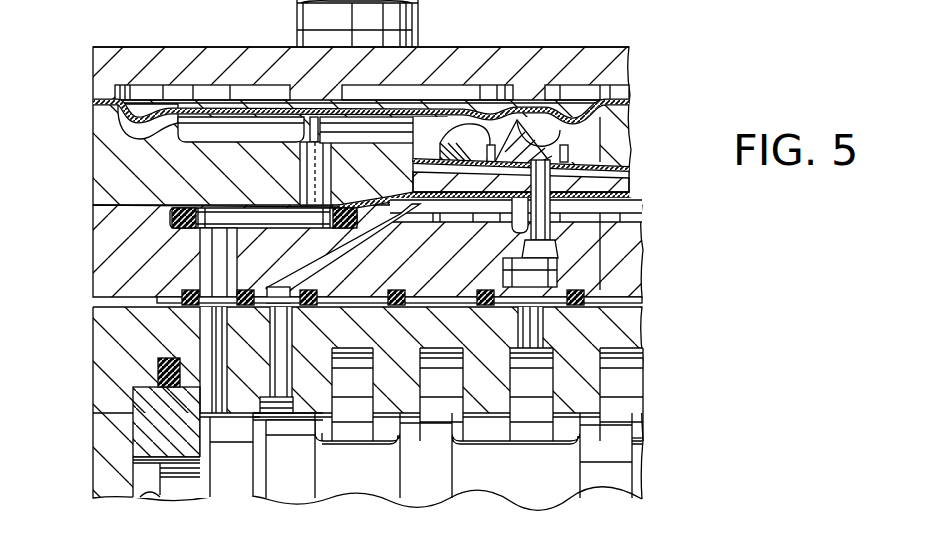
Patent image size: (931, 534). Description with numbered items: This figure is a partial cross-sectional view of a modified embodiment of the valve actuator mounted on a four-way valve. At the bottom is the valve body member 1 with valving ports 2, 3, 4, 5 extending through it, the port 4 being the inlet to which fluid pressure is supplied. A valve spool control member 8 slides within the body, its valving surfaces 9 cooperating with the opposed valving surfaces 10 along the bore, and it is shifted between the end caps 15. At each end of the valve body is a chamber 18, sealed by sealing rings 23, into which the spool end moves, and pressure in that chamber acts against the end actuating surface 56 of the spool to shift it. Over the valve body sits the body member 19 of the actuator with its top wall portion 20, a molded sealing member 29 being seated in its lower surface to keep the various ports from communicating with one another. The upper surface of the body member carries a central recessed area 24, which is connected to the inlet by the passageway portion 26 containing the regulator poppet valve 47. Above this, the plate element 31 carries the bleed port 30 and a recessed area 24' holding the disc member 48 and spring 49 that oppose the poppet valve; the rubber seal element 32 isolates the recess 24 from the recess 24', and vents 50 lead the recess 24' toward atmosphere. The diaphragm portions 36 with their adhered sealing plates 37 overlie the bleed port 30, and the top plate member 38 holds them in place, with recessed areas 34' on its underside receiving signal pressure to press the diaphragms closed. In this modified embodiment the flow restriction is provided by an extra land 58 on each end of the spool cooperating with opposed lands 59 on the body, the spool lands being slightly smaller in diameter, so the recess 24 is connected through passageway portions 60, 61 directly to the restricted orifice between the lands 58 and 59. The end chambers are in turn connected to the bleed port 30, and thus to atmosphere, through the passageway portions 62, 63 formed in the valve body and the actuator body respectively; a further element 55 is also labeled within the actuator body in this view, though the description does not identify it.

The valve body member 1 is at (648, 333).
The valving port 2 is at (360, 398).
The valving port 3 is at (450, 398).
The inlet port 4 is at (539, 398).
The valving port 5 is at (629, 398).
The valve spool control member 8 is at (645, 441).
The valving surfaces 9 is at (279, 420).
The opposed valving surfaces 10 is at (296, 412).
The end cap 15 is at (98, 452).
The chamber 18 is at (205, 428).
The body member 19 is at (646, 270).
The top wall portion 20 is at (108, 264).
The sealing rings 23 is at (170, 358).
The central recessed area 24 is at (516, 226).
The recessed area 24' is at (545, 170).
The passageway portion 26 is at (556, 256).
The molded sealing member 29 is at (398, 294).
The bleed port 30 is at (335, 131).
The plate element 31 is at (91, 151).
The rubber seal element 32 is at (397, 191).
The recessed areas 34' is at (372, 52).
The diaphragm portions 36 is at (237, 108).
The sealing plates 37 is at (215, 122).
The top plate member 38 is at (91, 70).
The poppet valve 47 is at (552, 250).
The disc member 48 is at (637, 188).
The spring 49 is at (467, 143).
The vents 50 is at (549, 155).
The passage 55 is at (254, 212).
The end actuating surface 56 is at (149, 492).
The extra land 58 is at (233, 414).
The lands 59 is at (244, 422).
The passageway portion 60 is at (356, 258).
The passageway portion 61 is at (289, 343).
The passageway portion 62 is at (227, 343).
The passageway portion 63 is at (210, 256).